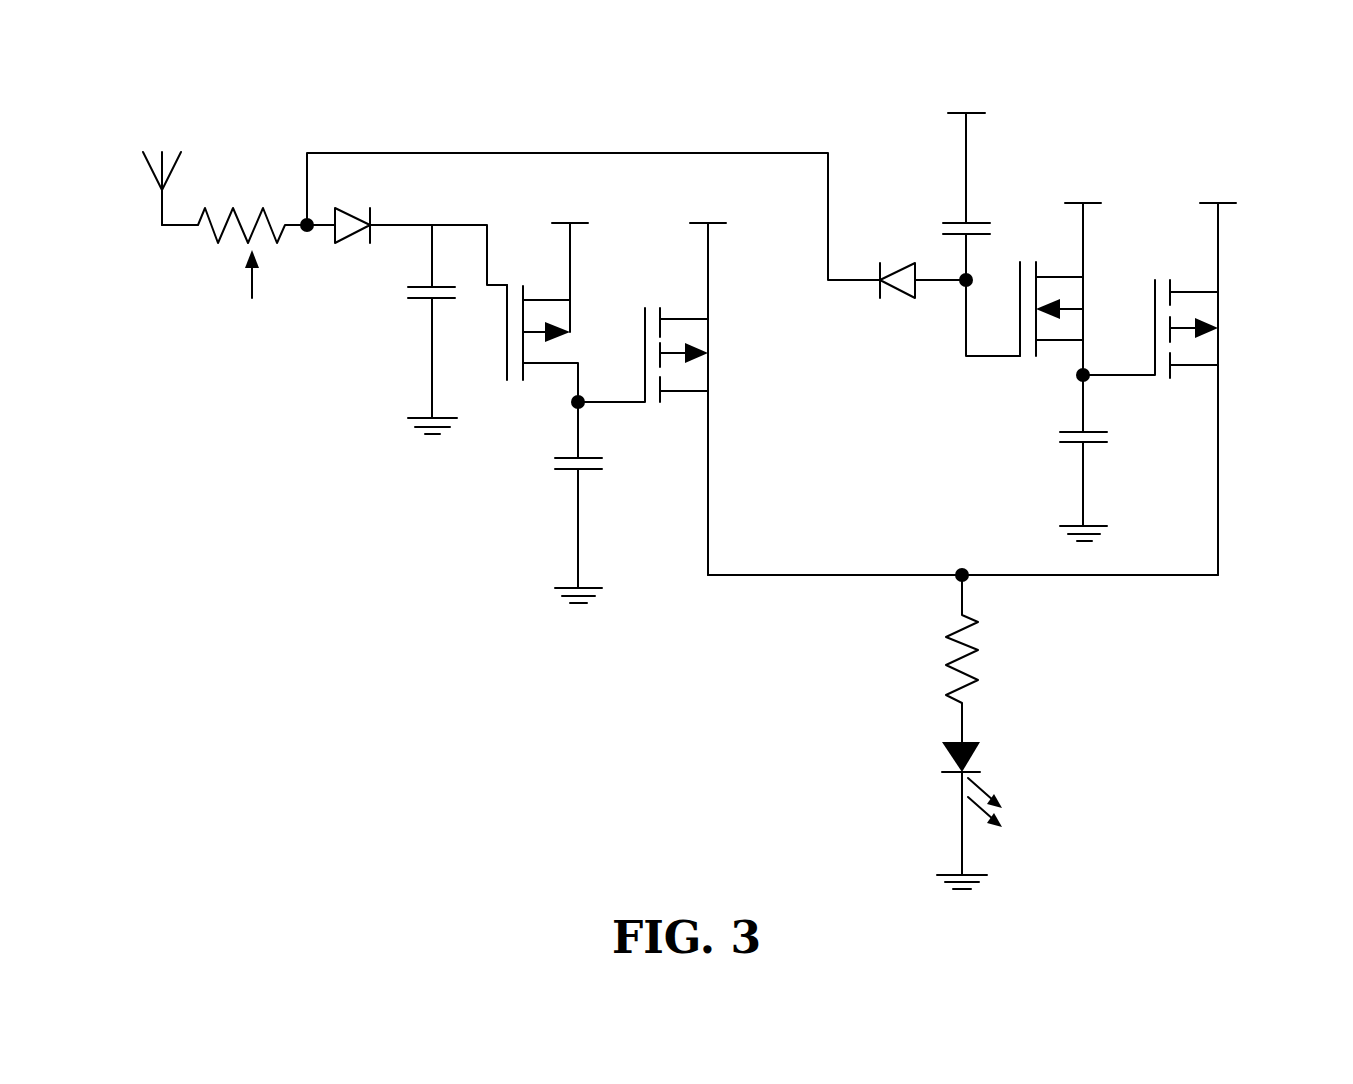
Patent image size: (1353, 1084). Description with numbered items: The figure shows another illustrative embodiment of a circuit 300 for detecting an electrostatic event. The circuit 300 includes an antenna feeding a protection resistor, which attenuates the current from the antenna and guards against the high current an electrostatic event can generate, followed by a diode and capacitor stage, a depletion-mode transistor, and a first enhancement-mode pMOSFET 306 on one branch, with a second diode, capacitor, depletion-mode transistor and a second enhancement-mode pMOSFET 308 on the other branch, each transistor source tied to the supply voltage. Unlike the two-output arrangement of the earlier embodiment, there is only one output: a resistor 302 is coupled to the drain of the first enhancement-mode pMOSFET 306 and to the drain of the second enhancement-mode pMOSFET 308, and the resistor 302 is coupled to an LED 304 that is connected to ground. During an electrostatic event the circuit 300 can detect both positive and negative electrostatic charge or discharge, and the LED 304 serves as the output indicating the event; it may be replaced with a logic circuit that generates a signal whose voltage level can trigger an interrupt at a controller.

The circuit 300 is at (334, 120).
The resistor 302 is at (968, 620).
The LED 304 is at (975, 742).
The first enhancement-mode pMOSFET 306 is at (645, 318).
The second enhancement-mode pMOSFET 308 is at (1155, 308).